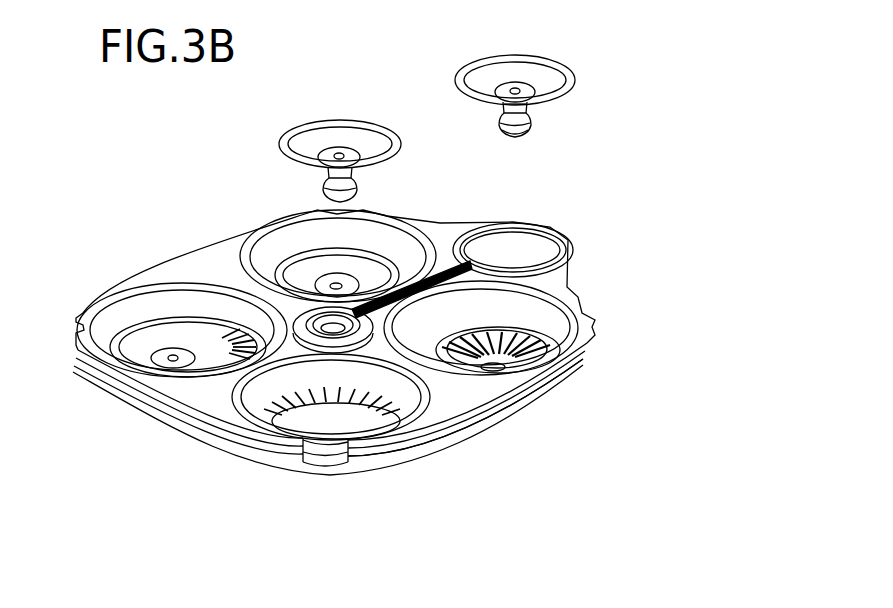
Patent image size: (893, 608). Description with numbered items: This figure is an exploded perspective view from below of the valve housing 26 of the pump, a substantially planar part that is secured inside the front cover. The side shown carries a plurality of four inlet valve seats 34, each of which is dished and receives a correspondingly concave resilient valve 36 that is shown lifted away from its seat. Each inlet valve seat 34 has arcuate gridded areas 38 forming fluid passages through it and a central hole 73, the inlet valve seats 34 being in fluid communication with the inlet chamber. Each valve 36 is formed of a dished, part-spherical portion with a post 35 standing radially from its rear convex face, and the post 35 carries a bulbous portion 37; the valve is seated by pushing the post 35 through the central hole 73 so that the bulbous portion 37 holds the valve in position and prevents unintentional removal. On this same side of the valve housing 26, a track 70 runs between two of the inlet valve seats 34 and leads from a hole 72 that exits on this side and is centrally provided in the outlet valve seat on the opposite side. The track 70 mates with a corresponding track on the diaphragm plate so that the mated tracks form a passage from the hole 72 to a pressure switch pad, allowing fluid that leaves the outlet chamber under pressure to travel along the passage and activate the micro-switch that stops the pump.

The valve housing 26 is at (197, 395).
The inlet valve seat 34 is at (207, 343).
The post 35 is at (530, 132).
The resilient valve 36 is at (355, 120).
The bulbous portion 37 is at (528, 124).
The arcuate gridded area 38 is at (508, 367).
The track 70 is at (446, 277).
The central hole 72 is at (242, 262).
The central hole 73 is at (540, 388).